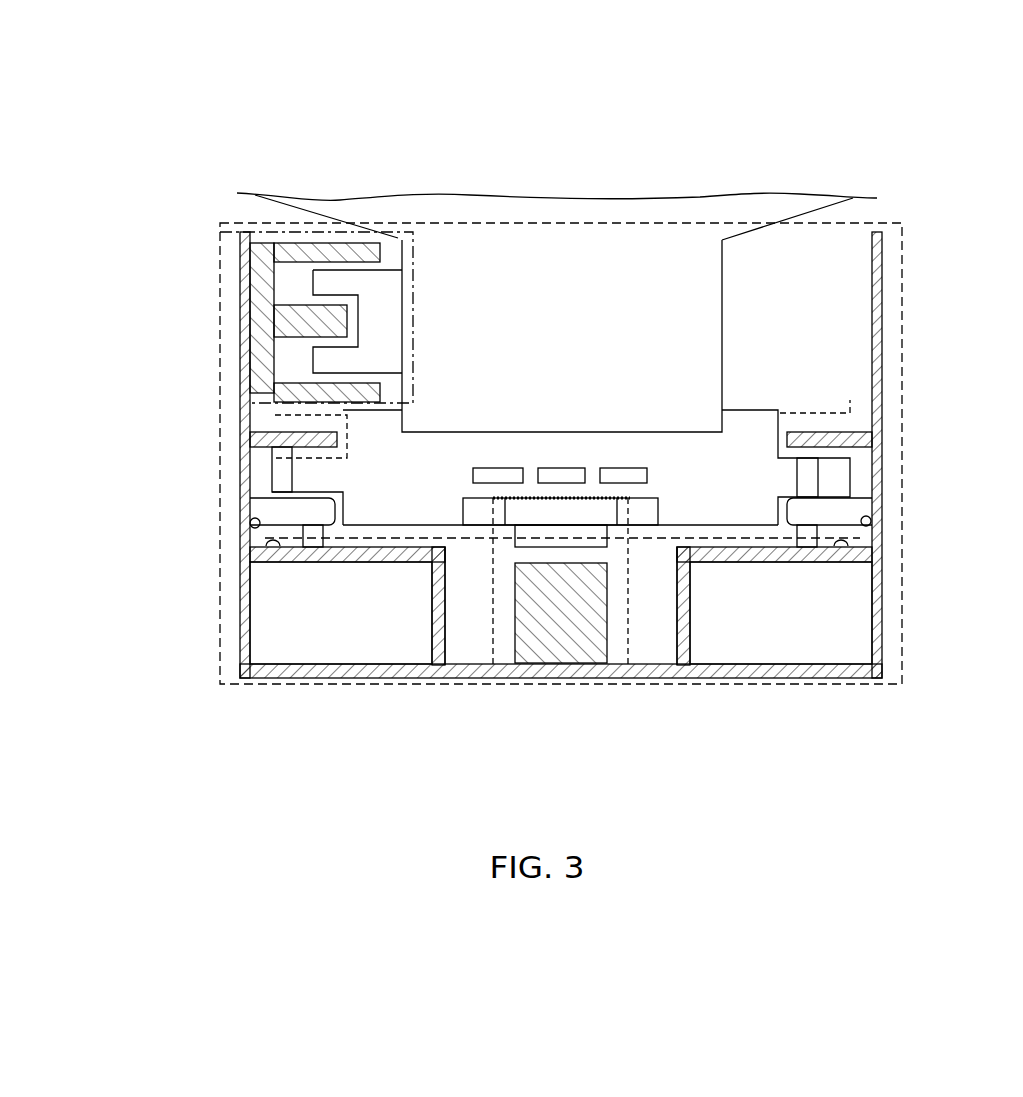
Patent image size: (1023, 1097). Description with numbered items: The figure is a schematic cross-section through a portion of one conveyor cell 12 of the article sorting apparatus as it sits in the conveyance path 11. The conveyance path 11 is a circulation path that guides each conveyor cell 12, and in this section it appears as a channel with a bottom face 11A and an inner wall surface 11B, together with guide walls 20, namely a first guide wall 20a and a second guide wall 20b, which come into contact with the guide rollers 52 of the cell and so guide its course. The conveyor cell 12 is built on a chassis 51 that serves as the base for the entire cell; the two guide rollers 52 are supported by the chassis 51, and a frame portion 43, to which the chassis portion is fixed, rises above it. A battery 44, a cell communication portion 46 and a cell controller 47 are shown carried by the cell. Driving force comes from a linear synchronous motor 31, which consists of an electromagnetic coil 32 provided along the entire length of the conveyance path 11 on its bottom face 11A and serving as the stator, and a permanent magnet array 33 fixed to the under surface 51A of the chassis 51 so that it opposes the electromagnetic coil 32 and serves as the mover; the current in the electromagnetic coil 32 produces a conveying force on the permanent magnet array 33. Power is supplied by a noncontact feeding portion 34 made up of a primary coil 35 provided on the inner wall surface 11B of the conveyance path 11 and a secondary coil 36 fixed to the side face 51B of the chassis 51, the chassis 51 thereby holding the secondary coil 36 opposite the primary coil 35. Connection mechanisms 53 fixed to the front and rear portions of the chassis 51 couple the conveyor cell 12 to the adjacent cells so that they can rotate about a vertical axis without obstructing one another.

The conveyance path 11 is at (230, 692).
The bottom face 11A is at (458, 660).
The inner wall surface 11B is at (262, 240).
The conveyor cell 12 is at (772, 122).
The guide wall 20 is at (546, 549).
The first guide wall 20a is at (870, 524).
The second guide wall 20b is at (848, 538).
The linear synchronous motor 31 is at (486, 636).
The electromagnetic coil 32 is at (585, 645).
The permanent magnet array 33 is at (607, 535).
The noncontact feeding portion 34 is at (328, 210).
The primary coil 35 is at (250, 295).
The secondary coil 36 is at (385, 280).
The frame portion 43 is at (658, 230).
The battery 44 is at (621, 468).
The cell communication portion 46 is at (497, 468).
The cell controller 47 is at (561, 468).
The chassis 51 is at (742, 418).
The under surface 51A is at (457, 525).
The side face 51B is at (398, 314).
The guide roller 52 is at (860, 497).
The connection mechanism 53 is at (650, 508).